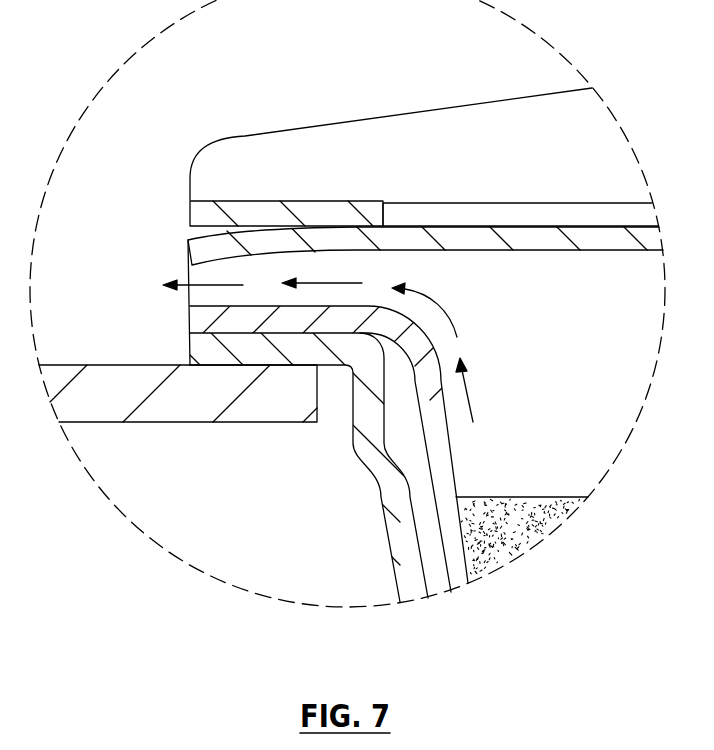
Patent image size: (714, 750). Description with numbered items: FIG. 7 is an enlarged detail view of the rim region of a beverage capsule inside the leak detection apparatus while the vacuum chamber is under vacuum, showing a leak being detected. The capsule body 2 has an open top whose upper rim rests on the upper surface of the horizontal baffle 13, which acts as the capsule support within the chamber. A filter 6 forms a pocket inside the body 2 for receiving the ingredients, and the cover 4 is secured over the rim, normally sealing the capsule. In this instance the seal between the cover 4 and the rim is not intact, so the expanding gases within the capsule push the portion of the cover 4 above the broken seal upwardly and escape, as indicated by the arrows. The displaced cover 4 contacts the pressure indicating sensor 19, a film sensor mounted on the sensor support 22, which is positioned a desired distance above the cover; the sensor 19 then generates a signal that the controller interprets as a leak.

The body 2 is at (383, 500).
The cover 4 is at (546, 242).
The filter 6 is at (443, 547).
The horizontal baffle 13 is at (208, 407).
The pressure indicating sensor 19 is at (190, 215).
The sensor support 22 is at (313, 153).